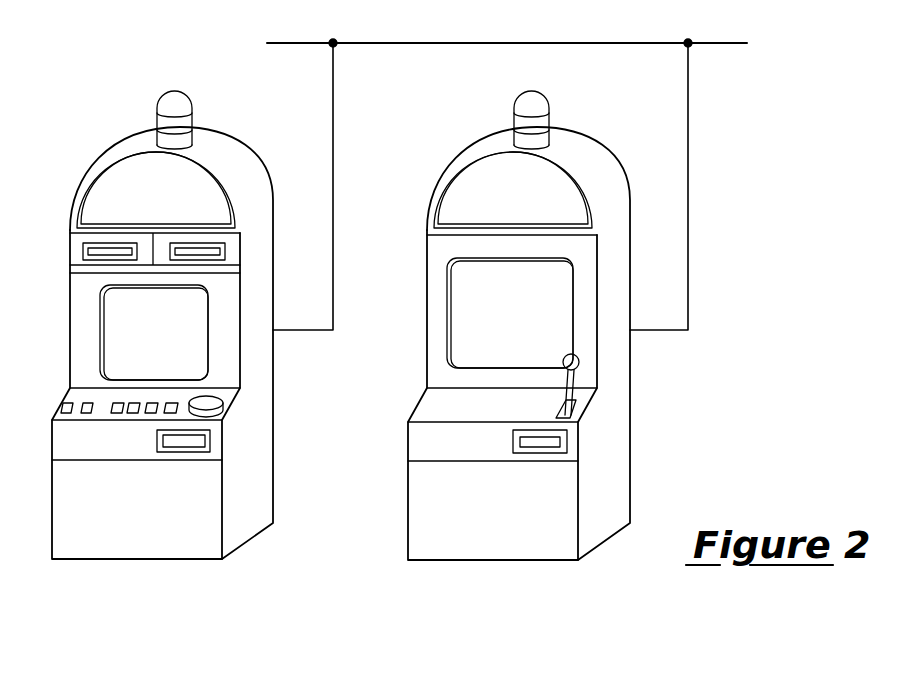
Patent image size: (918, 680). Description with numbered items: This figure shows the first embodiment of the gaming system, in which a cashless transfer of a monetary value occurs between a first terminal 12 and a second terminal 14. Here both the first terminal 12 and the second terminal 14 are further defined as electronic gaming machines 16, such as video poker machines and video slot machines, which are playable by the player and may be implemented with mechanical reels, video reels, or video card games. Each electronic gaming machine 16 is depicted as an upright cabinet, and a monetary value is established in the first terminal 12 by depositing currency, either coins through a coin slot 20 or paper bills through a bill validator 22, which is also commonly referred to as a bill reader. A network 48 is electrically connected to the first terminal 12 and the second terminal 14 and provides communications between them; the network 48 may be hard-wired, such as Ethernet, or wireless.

The first terminal 12 is at (191, 354).
The second terminal 14 is at (499, 569).
The electronic gaming machine 16 is at (273, 467).
The coin slot 20 is at (223, 405).
The bill validator 22 is at (210, 440).
The network 48 is at (506, 43).